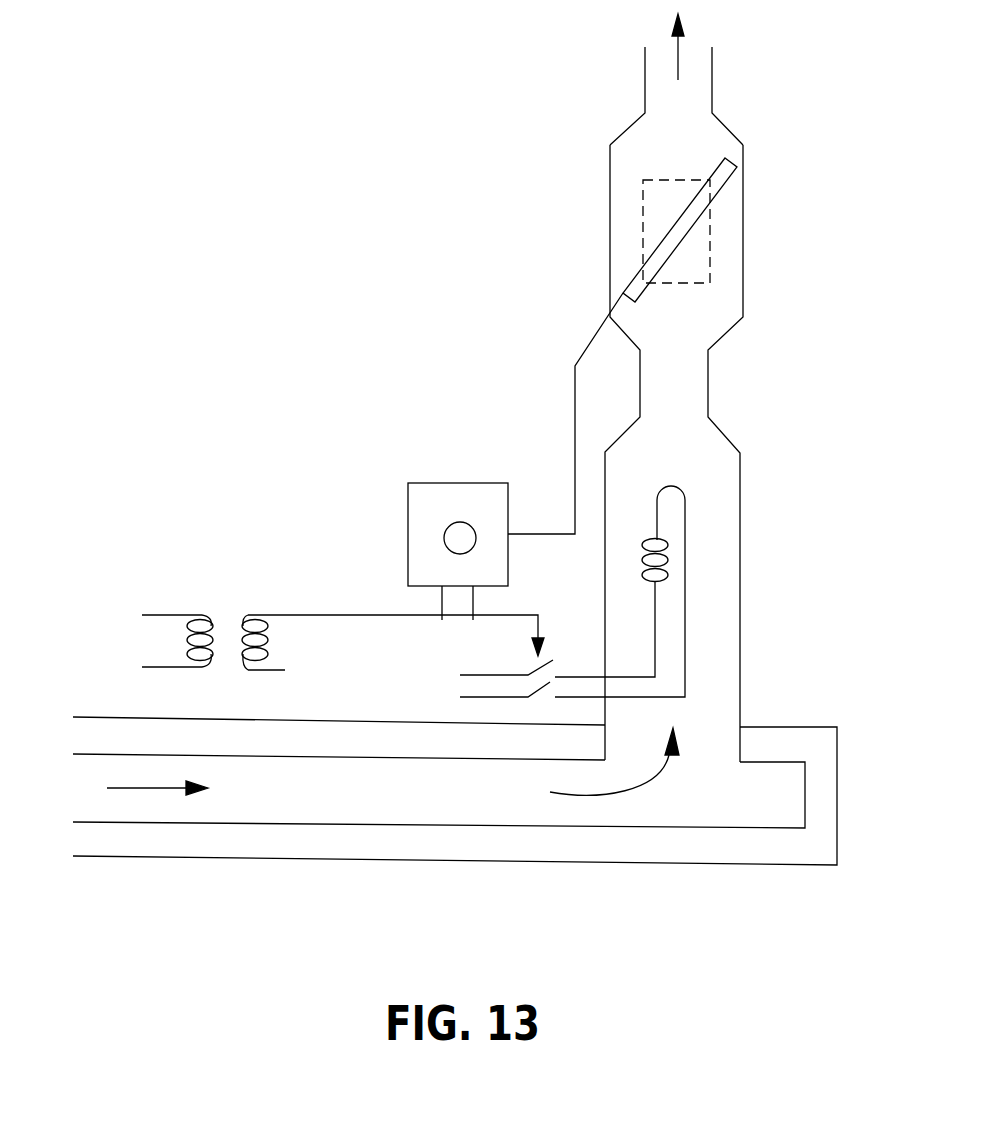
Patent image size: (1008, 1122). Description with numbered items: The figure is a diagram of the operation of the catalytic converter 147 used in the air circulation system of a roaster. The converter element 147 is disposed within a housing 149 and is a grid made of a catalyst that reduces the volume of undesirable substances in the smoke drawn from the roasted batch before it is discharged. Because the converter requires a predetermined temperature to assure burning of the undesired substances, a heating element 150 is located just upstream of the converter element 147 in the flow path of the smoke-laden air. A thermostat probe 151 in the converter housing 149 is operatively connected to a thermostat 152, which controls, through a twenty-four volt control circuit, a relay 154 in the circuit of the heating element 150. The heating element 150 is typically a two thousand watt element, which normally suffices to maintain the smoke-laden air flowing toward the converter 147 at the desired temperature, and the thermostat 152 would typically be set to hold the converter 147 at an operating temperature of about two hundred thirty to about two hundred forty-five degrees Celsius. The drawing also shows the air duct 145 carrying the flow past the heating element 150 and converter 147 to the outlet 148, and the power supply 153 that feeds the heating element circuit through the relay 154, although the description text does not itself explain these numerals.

The flow channel 145 is at (720, 598).
The catalytic converter 147 is at (673, 180).
The outlet pipe 148 is at (695, 83).
The converter housing 149 is at (610, 205).
The heating element 150 is at (672, 492).
The thermostat probe 151 is at (728, 172).
The thermostat 152 is at (408, 515).
The power supply transformer 153 is at (347, 615).
The relay 154 is at (538, 677).